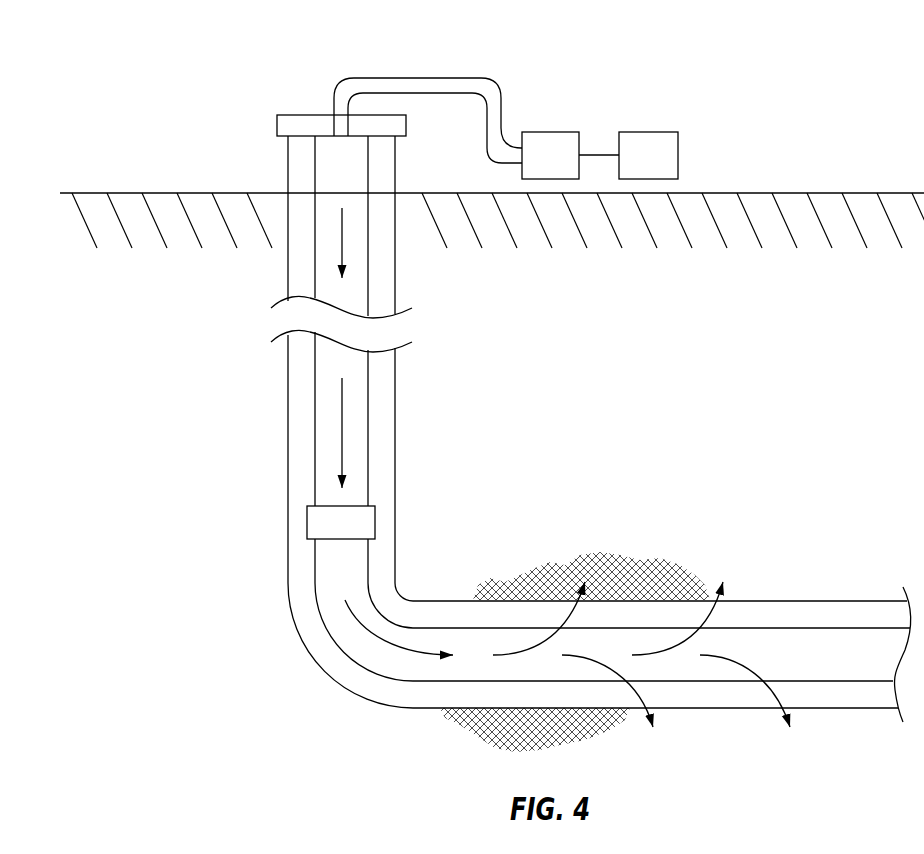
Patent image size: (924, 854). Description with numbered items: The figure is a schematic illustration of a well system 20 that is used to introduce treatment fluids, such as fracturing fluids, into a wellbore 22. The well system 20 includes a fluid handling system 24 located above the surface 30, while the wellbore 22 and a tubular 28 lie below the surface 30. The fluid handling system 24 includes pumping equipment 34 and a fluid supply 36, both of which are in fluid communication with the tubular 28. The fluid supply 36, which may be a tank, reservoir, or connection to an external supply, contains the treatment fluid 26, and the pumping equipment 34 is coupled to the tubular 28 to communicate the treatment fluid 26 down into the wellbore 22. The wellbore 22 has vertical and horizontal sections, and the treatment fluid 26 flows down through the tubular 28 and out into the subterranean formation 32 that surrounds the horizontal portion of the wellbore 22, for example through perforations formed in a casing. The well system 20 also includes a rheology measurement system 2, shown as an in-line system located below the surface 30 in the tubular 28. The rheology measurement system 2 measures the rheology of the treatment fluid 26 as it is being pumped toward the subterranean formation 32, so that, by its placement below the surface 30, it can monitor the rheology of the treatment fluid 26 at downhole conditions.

The rheology measurement system 2 is at (375, 522).
The well system 20 is at (187, 102).
The wellbore 22 is at (288, 420).
The fluid handling system 24 is at (638, 67).
The treatment fluid 26 is at (343, 243).
The tubular 28 is at (313, 270).
The surface 30 is at (722, 192).
The subterranean formation 32 is at (728, 515).
The pumping equipment 34 is at (550, 132).
The fluid supply 36 is at (648, 132).